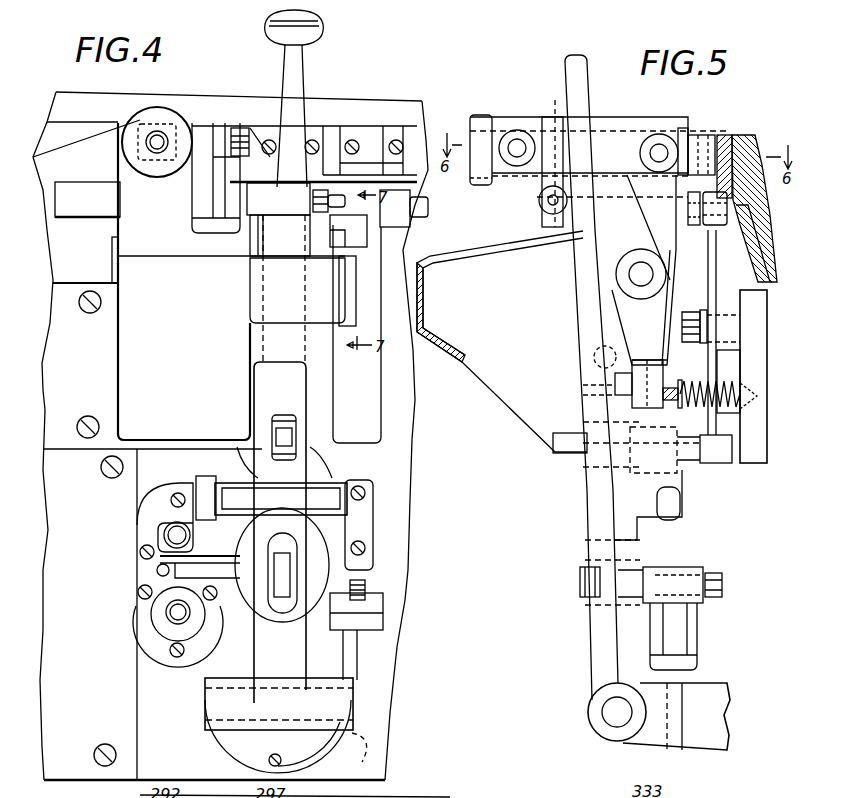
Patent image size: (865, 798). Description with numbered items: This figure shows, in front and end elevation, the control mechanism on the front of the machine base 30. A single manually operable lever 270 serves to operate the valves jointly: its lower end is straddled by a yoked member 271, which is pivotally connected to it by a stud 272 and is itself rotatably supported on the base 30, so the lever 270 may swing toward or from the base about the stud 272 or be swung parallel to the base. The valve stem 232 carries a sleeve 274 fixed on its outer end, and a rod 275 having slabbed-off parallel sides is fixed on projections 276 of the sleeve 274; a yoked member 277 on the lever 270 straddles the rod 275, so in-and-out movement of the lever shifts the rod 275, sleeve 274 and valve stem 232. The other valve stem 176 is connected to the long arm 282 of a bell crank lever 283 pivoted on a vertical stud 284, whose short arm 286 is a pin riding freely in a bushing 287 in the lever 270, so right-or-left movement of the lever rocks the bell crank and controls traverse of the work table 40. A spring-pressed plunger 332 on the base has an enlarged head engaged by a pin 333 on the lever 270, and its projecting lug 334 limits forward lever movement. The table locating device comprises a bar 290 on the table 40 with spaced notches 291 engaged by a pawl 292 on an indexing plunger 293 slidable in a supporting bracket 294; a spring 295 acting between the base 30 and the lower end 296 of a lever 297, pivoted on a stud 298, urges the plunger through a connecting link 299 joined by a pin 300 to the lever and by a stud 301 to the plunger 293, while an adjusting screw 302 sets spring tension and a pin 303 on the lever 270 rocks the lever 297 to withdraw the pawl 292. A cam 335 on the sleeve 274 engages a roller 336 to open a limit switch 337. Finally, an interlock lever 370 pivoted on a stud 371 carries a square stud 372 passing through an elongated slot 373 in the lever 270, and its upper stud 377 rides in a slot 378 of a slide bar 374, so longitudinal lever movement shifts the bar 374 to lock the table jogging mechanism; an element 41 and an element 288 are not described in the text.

In FIG. 4, the base 30 is at (388, 580).
In FIG. 5, the base 30 is at (770, 283).
In FIG. 4, the work table 40 is at (250, 82).
In FIG. 5, the work table 40 is at (760, 128).
In FIG. 5, the rail 41 is at (757, 223).
In FIG. 4, the valve stem 176 is at (170, 612).
In FIG. 4, the valve stem 232 is at (170, 535).
In FIG. 4, the manually operable lever 270 is at (302, 78).
In FIG. 5, the manually operable lever 270 is at (565, 70).
In FIG. 4, the yoked member 271 is at (353, 690).
In FIG. 5, the yoked member 271 is at (655, 752).
In FIG. 4, the stud 272 is at (357, 752).
In FIG. 5, the stud 272 is at (605, 712).
In FIG. 4, the sleeve 274 is at (165, 500).
In FIG. 4, the rod 275 is at (333, 484).
In FIG. 5, the rod 275 is at (672, 522).
In FIG. 4, the projections 276 is at (208, 476).
In FIG. 5, the yoked member 277 is at (688, 492).
In FIG. 4, the long arm 282 is at (157, 570).
In FIG. 5, the bell crank lever 283 is at (700, 563).
In FIG. 5, the stud 284 is at (697, 625).
In FIG. 4, the short arm 286 is at (282, 605).
In FIG. 5, the short arm 286 is at (580, 572).
In FIG. 4, the bushing 287 is at (282, 533).
In FIG. 5, the pivot pin 288 is at (548, 200).
In FIG. 5, the bar 290 is at (724, 135).
In FIG. 4, the notches 291 is at (383, 123).
In FIG. 5, the notches 291 is at (704, 135).
In FIG. 5, the pawl 292 is at (682, 118).
In FIG. 4, the indexing plunger 293 is at (150, 137).
In FIG. 5, the indexing plunger 293 is at (525, 130).
In FIG. 5, the supporting bracket 294 is at (604, 117).
In FIG. 5, the spring 295 is at (686, 382).
In FIG. 5, the lower end 296 is at (600, 362).
In FIG. 4, the lever 297 is at (188, 200).
In FIG. 5, the lever 297 is at (612, 305).
In FIG. 5, the stud 298 is at (629, 274).
In FIG. 5, the connecting link 299 is at (626, 170).
In FIG. 5, the pin 300 is at (659, 165).
In FIG. 5, the stud 301 is at (515, 135).
In FIG. 5, the adjusting screw 302 is at (650, 392).
In FIG. 5, the pin 303 is at (612, 398).
In FIG. 4, the spring-pressed plunger 332 is at (430, 228).
In FIG. 4, the pin 333 is at (292, 200).
In FIG. 4, the projecting lug 334 is at (330, 228).
In FIG. 4, the cam 335 is at (375, 556).
In FIG. 4, the roller 336 is at (385, 597).
In FIG. 4, the limit switch 337 is at (366, 610).
In FIG. 5, the lever 370 is at (702, 278).
In FIG. 5, the stud 371 is at (758, 335).
In FIG. 4, the stud 372 is at (293, 437).
In FIG. 5, the stud 372 is at (575, 453).
In FIG. 4, the elongated slot 373 is at (285, 415).
In FIG. 4, the bar 374 is at (85, 182).
In FIG. 5, the bar 374 is at (690, 222).
In FIG. 5, the stud 377 is at (688, 208).
In FIG. 5, the slot 378 is at (660, 212).